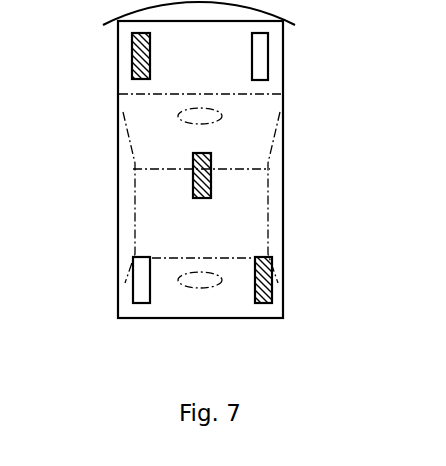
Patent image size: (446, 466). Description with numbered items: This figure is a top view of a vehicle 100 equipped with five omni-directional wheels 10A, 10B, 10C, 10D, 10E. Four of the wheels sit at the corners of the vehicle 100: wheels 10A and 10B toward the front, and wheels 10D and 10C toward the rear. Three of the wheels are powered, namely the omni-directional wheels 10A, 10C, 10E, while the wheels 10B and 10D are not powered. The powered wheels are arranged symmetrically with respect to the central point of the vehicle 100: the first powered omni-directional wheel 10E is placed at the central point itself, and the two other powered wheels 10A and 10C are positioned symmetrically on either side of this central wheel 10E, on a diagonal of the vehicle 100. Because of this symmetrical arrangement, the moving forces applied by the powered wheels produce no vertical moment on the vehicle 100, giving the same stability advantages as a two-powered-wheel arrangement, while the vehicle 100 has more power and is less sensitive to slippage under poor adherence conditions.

The vehicle 100 is at (318, 158).
The powered omni-directional wheel 10A is at (133, 48).
The omni-directional wheel 10B is at (259, 48).
The powered omni-directional wheel 10C is at (263, 277).
The omni-directional wheel 10D is at (142, 272).
The central powered omni-directional wheel 10E is at (210, 168).